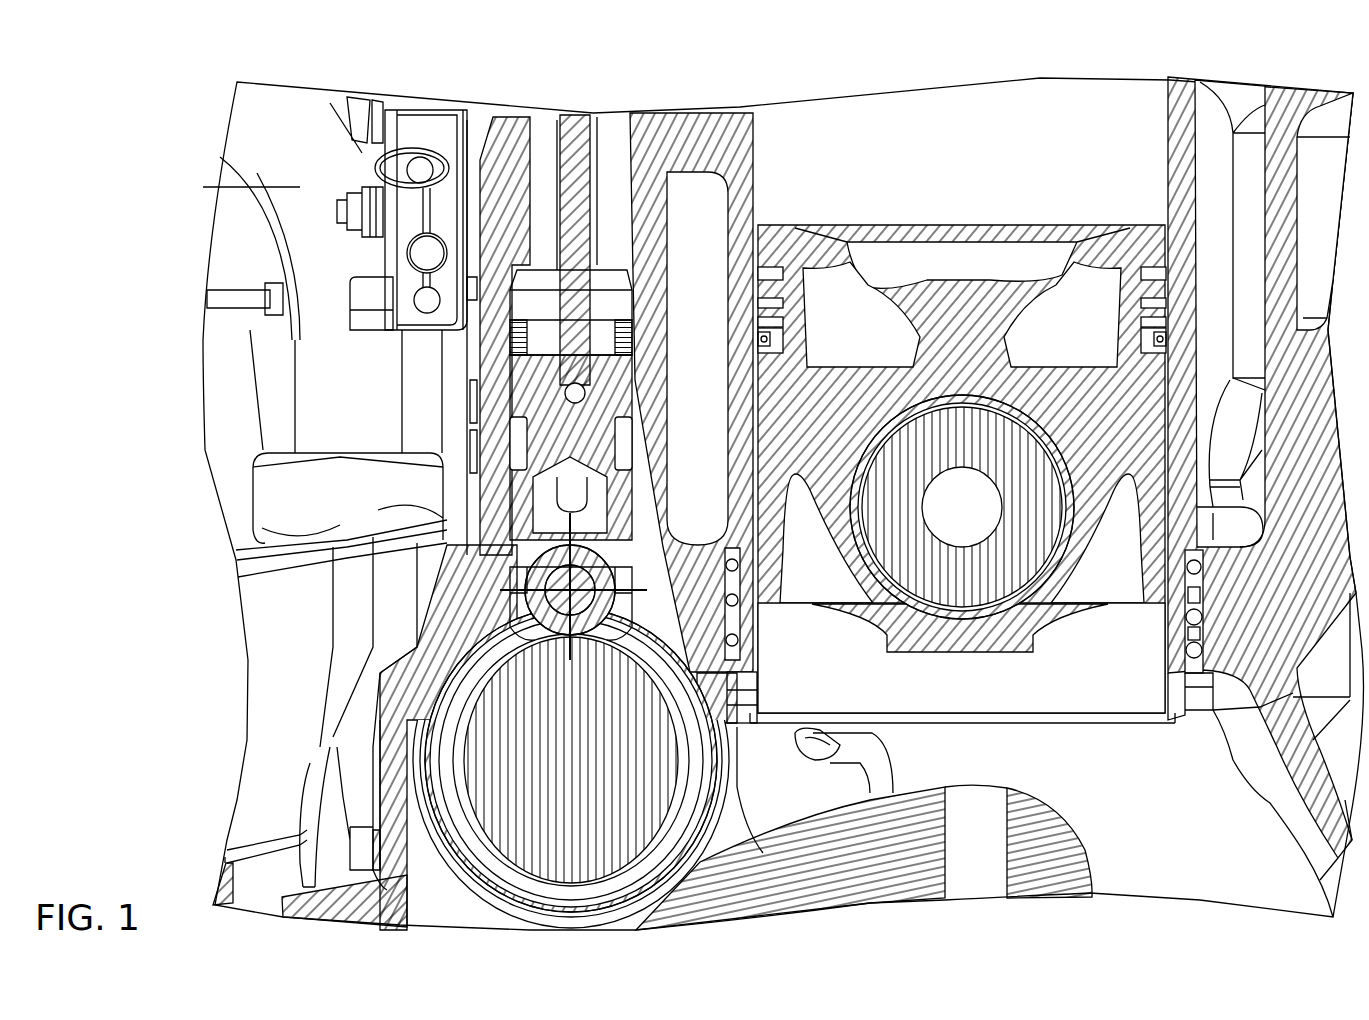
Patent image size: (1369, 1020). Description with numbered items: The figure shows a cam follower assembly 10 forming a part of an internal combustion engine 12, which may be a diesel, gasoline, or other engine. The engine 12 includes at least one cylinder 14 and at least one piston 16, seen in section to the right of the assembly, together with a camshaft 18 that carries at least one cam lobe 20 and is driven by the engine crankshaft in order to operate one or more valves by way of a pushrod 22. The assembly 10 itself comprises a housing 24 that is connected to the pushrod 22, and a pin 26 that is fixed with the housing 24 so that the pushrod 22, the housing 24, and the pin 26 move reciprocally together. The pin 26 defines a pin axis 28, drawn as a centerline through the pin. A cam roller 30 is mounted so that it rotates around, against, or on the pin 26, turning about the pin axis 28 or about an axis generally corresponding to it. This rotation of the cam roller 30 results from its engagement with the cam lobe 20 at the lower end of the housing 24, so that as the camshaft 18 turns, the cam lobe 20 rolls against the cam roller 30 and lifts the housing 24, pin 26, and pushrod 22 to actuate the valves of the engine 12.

The cam follower assembly 10 is at (608, 160).
The internal combustion engine 12 is at (530, 67).
The cylinder 14 is at (820, 143).
The piston 16 is at (1050, 290).
The camshaft 18 is at (463, 730).
The cam lobe 20 is at (520, 737).
The pushrod 22 is at (577, 150).
The housing 24 is at (583, 433).
The pin 26 is at (615, 625).
The pin axis 28 is at (632, 560).
The cam roller 30 is at (607, 590).